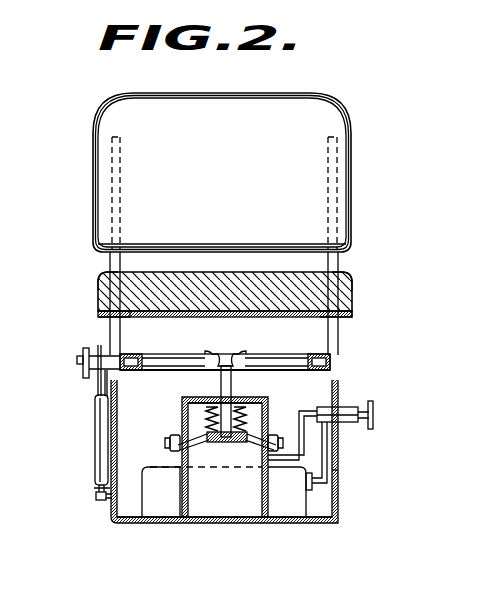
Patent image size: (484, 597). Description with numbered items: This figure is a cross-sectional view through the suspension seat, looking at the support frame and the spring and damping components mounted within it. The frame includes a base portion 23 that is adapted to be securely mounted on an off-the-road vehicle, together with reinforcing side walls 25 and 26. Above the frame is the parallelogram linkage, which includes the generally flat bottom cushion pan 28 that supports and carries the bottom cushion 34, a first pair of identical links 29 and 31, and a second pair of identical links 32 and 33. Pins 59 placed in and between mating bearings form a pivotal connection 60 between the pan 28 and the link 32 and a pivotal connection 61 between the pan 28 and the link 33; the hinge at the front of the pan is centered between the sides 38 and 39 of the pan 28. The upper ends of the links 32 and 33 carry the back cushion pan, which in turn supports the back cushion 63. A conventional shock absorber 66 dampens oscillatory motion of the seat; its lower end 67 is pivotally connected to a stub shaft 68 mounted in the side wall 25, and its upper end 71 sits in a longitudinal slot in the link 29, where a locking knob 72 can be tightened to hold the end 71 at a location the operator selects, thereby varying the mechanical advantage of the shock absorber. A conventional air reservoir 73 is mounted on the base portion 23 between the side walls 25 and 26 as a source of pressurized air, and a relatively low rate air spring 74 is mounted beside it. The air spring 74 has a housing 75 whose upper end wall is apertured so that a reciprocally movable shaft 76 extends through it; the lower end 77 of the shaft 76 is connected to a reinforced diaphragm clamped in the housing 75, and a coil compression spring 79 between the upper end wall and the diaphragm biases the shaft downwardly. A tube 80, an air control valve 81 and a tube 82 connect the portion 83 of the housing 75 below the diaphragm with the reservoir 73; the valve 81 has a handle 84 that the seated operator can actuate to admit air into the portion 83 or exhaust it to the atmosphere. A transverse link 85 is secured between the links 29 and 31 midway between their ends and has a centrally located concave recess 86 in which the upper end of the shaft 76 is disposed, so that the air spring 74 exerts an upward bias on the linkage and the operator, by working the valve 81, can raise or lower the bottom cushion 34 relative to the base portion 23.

The base portion 23 is at (231, 524).
The side wall 25 is at (118, 459).
The side wall 26 is at (339, 497).
The bottom cushion pan 28 is at (193, 311).
The link 29 is at (129, 354).
The link 31 is at (318, 355).
The link 32 is at (121, 166).
The link 33 is at (326, 155).
The bottom cushion 34 is at (238, 272).
The side of the pan 38 is at (97, 312).
The side of the pan 39 is at (355, 313).
The pins 59 is at (225, 291).
The pivotal connection 60 is at (98, 276).
The pivotal connection 61 is at (348, 274).
The back cushion 63 is at (250, 134).
The shock absorber 66 is at (96, 416).
The lower end of the shock absorber 67 is at (95, 488).
The stub shaft 68 is at (96, 496).
The upper end of the shock absorber 71 is at (102, 344).
The locking knob 72 is at (82, 356).
The air reservoir 73 is at (167, 490).
The air spring 74 is at (181, 407).
The housing 75 is at (275, 399).
The shaft 76 is at (231, 388).
The lower end of the shaft 77 is at (207, 428).
The coil compression spring 79 is at (206, 409).
The tube 80 is at (297, 425).
The air control valve 81 is at (347, 407).
The tube 82 is at (328, 460).
The portion of the housing 83 is at (238, 498).
The handle 84 is at (374, 416).
The transverse link 85 is at (168, 354).
The concave recess 86 is at (233, 351).